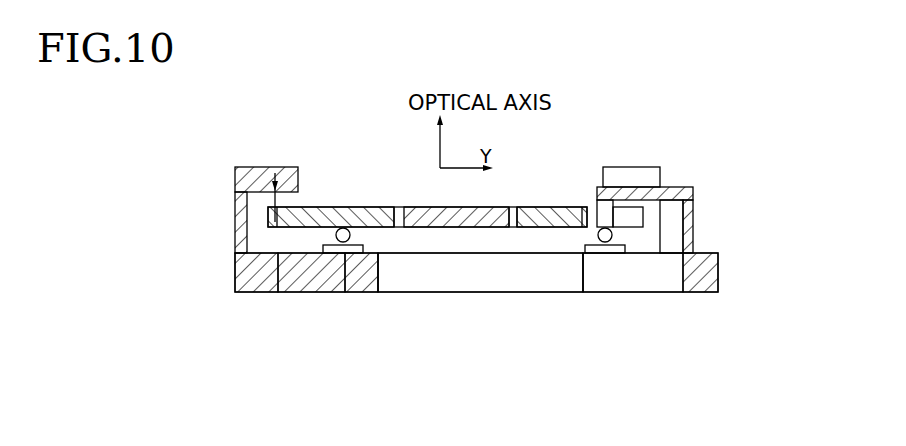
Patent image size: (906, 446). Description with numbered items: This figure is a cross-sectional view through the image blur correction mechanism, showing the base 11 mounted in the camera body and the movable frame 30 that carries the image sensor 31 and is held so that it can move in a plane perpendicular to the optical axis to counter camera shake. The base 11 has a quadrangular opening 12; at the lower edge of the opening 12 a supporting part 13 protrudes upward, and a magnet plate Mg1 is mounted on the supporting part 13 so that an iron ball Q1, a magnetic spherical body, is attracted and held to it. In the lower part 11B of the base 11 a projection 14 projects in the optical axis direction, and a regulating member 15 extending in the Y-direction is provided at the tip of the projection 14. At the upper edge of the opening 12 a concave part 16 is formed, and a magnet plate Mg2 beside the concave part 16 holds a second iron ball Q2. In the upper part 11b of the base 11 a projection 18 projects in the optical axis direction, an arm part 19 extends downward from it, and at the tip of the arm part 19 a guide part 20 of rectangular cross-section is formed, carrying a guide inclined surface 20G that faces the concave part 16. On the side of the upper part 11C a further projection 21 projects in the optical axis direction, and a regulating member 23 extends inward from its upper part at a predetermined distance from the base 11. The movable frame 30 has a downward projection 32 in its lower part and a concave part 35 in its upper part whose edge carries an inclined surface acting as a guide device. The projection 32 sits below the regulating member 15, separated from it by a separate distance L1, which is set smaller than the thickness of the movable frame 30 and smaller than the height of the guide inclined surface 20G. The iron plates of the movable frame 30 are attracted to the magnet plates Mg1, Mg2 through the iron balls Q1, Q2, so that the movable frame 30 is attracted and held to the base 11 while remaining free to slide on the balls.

The base 11 is at (231, 262).
The lower part of the base 11B is at (255, 277).
The upper part of the base 11b is at (580, 277).
The upper part of the base 11C is at (718, 262).
The opening 12 is at (455, 273).
The supporting part 13 is at (320, 280).
The projection 14 is at (237, 214).
The regulating member 15 is at (277, 167).
The concave part 16 is at (672, 290).
The projection 18 is at (694, 216).
The arm part 19 is at (662, 187).
The guide part 20 is at (604, 215).
The guide inclined surface 20G is at (613, 207).
The projection 21 is at (662, 212).
The regulating member 23 is at (647, 167).
The movable frame 30 is at (338, 198).
The image sensor 31 is at (485, 206).
The projection 32 is at (283, 228).
The concave part 35 is at (590, 205).
The iron ball Q1 is at (348, 230).
The iron ball Q2 is at (597, 238).
The magnet plate Mg1 is at (350, 253).
The magnet plate Mg2 is at (603, 253).
The separate distance L1 is at (272, 200).